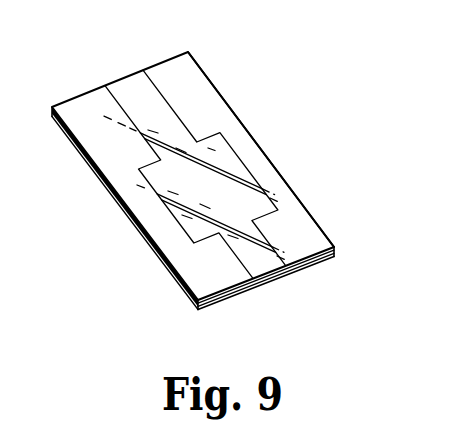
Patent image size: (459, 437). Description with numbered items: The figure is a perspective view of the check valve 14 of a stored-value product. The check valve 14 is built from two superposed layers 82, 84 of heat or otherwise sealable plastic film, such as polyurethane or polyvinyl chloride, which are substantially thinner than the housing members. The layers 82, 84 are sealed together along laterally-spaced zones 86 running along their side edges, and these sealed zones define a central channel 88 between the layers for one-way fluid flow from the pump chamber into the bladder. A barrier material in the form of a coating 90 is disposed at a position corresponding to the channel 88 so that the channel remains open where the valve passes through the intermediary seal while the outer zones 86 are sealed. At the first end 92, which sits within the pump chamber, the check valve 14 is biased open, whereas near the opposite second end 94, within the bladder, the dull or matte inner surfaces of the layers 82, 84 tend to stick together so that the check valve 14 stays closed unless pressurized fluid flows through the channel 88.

The check valve 14 is at (226, 74).
The layer 82 is at (318, 263).
The layer 84 is at (298, 230).
The laterally-spaced zones 86 is at (133, 149).
The central channel 88 is at (265, 206).
The coating 90 is at (208, 187).
The first end 92 is at (273, 279).
The second end 94 is at (120, 78).